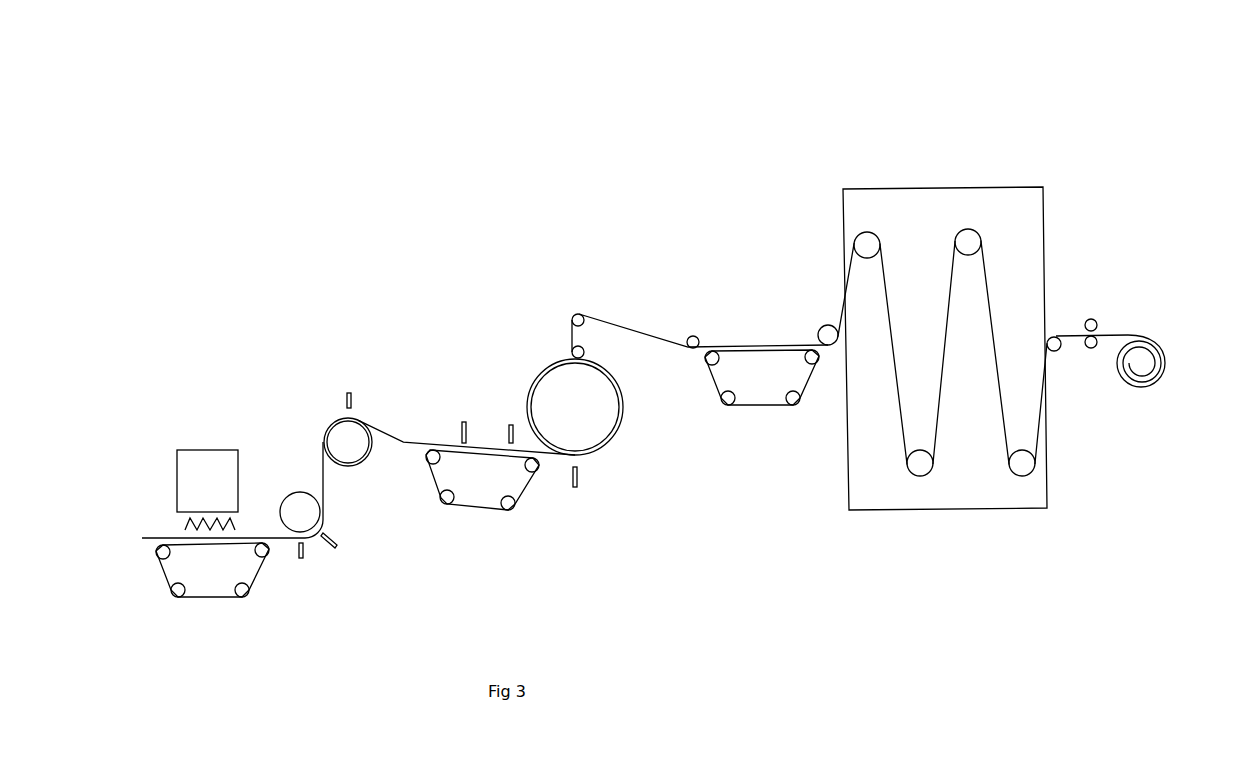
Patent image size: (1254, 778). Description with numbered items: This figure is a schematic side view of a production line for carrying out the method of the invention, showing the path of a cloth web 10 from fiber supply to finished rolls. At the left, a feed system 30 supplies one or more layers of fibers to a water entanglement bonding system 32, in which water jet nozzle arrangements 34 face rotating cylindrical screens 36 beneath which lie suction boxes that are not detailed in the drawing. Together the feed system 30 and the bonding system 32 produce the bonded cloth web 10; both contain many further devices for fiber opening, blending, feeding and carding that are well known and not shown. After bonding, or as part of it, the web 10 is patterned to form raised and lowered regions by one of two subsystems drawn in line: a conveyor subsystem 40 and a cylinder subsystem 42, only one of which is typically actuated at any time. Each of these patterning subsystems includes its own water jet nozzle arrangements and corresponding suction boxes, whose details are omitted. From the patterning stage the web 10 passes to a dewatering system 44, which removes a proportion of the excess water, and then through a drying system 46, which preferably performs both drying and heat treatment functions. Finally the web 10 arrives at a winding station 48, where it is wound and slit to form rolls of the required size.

The web 10 is at (440, 443).
The feed system 30 is at (224, 396).
The water entanglement bonding system 32 is at (374, 389).
The water jet nozzle arrangements 34 is at (347, 397).
The rotating cylindrical screens 36 is at (297, 510).
The conveyor subsystem 40 is at (482, 402).
The cylinder subsystem 42 is at (600, 297).
The dewatering system 44 is at (744, 316).
The drying system 46 is at (930, 146).
The winding station 48 is at (1162, 309).